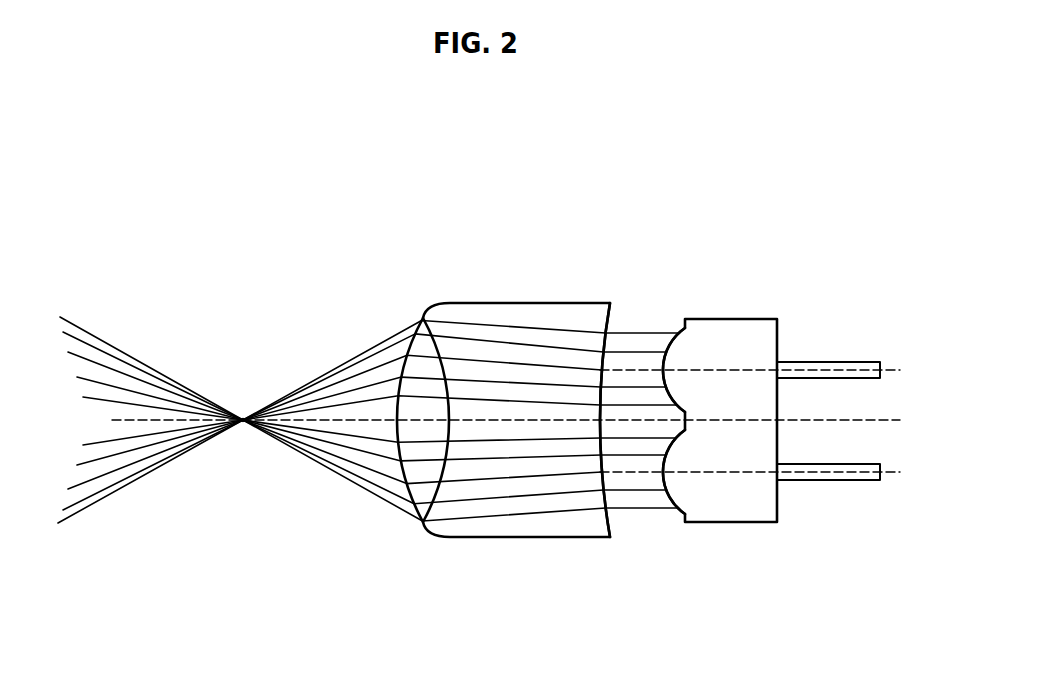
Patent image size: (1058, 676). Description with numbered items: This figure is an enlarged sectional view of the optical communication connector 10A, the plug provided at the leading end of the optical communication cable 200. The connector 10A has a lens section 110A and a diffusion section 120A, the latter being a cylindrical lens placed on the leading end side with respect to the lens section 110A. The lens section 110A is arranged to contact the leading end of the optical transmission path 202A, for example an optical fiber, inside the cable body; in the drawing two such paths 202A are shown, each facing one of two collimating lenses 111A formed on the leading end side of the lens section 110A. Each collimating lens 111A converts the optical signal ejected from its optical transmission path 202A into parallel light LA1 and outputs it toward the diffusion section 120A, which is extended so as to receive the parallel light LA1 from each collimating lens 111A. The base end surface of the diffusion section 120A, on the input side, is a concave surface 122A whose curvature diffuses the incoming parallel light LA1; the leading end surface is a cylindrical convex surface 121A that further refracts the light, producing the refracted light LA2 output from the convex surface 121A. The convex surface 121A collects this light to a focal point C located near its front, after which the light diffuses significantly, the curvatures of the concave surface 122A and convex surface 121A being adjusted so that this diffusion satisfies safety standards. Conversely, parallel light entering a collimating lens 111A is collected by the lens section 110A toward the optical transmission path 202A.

The optical communication connector 10A is at (750, 382).
The lens section 110A is at (732, 518).
The collimating lens 111A is at (670, 327).
The diffusion section 120A is at (510, 420).
The cylindrical convex surface 121A is at (423, 325).
The concave surface 122A is at (610, 537).
The optical communication cable 200 is at (847, 644).
The optical transmission path 202A is at (826, 361).
The focal point C is at (243, 418).
The parallel light LA1 is at (640, 330).
The refracted light LA2 is at (332, 372).